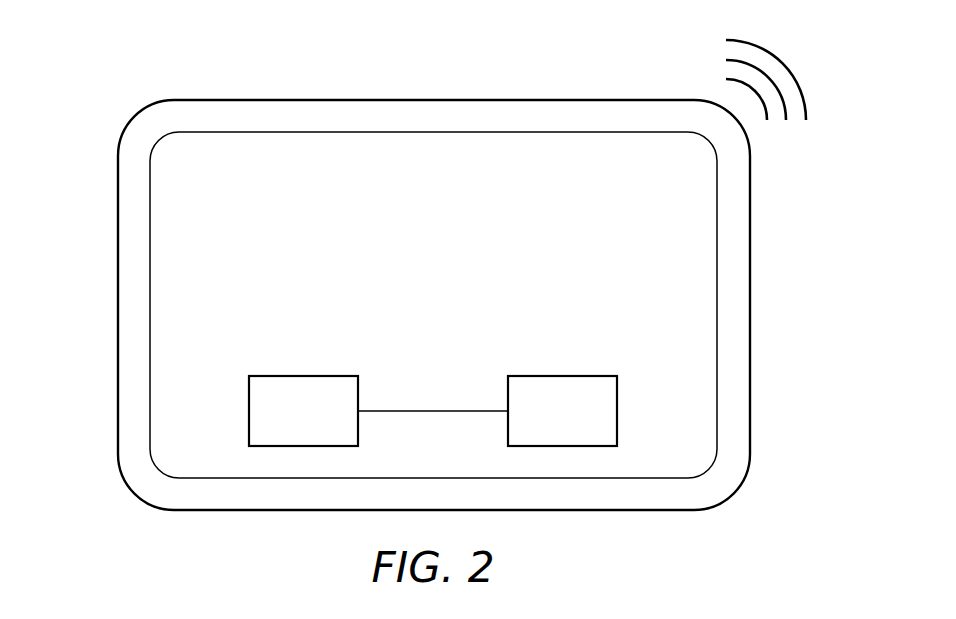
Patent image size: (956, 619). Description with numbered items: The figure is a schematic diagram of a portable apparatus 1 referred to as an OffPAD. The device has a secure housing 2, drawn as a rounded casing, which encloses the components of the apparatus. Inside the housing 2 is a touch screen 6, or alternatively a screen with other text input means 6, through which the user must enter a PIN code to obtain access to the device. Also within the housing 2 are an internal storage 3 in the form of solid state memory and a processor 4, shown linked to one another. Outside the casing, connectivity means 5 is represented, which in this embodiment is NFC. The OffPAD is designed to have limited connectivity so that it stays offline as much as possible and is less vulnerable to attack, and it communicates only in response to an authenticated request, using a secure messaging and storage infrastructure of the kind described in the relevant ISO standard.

The portable apparatus 1 is at (61, 86).
The secure housing 2 is at (118, 176).
The internal storage 3 is at (598, 376).
The processor 4 is at (338, 376).
The connectivity means 5 is at (800, 78).
The touch screen 6 is at (172, 304).